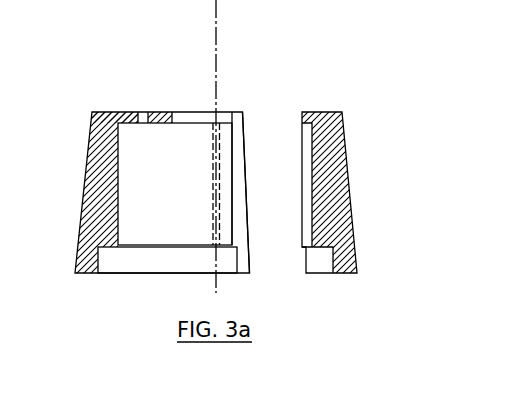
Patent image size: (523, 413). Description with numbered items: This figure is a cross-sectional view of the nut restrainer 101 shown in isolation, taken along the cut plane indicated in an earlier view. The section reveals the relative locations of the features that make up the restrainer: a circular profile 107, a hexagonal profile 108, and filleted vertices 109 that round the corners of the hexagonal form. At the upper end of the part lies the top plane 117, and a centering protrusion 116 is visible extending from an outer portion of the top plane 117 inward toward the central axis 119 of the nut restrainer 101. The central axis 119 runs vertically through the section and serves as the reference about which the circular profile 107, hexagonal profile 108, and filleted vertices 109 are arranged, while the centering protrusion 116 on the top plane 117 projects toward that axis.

The nut restrainer 101 is at (350, 185).
The circular profile 107 is at (99, 262).
The hexagonal profile 108 is at (233, 187).
The filleted vertices 109 is at (222, 144).
The centering protrusion 116 is at (167, 111).
The top plane 117 is at (127, 111).
The central axis 119 is at (218, 61).